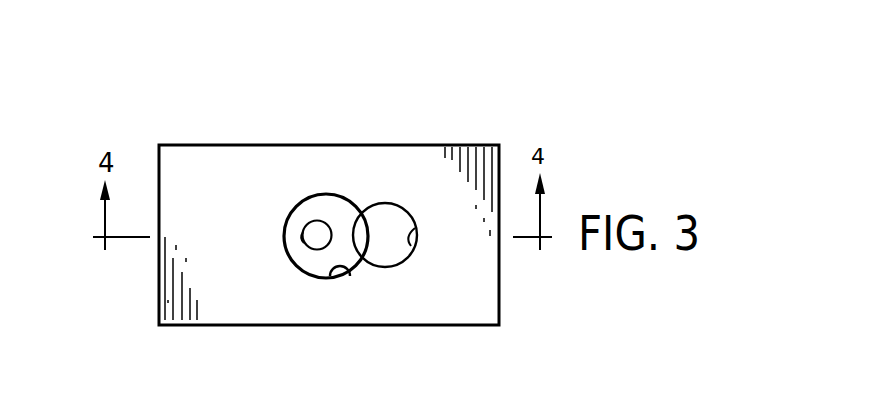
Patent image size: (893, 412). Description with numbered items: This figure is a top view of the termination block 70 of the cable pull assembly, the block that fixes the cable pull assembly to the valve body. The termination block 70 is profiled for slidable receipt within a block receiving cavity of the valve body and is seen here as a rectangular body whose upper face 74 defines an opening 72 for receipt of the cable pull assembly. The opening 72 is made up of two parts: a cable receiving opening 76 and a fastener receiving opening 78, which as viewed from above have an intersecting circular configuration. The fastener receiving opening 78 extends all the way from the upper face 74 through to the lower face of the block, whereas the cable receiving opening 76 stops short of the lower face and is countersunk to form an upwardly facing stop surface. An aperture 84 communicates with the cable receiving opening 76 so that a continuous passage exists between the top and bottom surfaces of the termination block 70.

The termination block member 70 is at (387, 108).
The opening 72 is at (338, 206).
The upper face 74 is at (225, 266).
The cable receiving opening 76 is at (337, 268).
The fastener receiving opening 78 is at (408, 257).
The aperture 84 is at (306, 247).